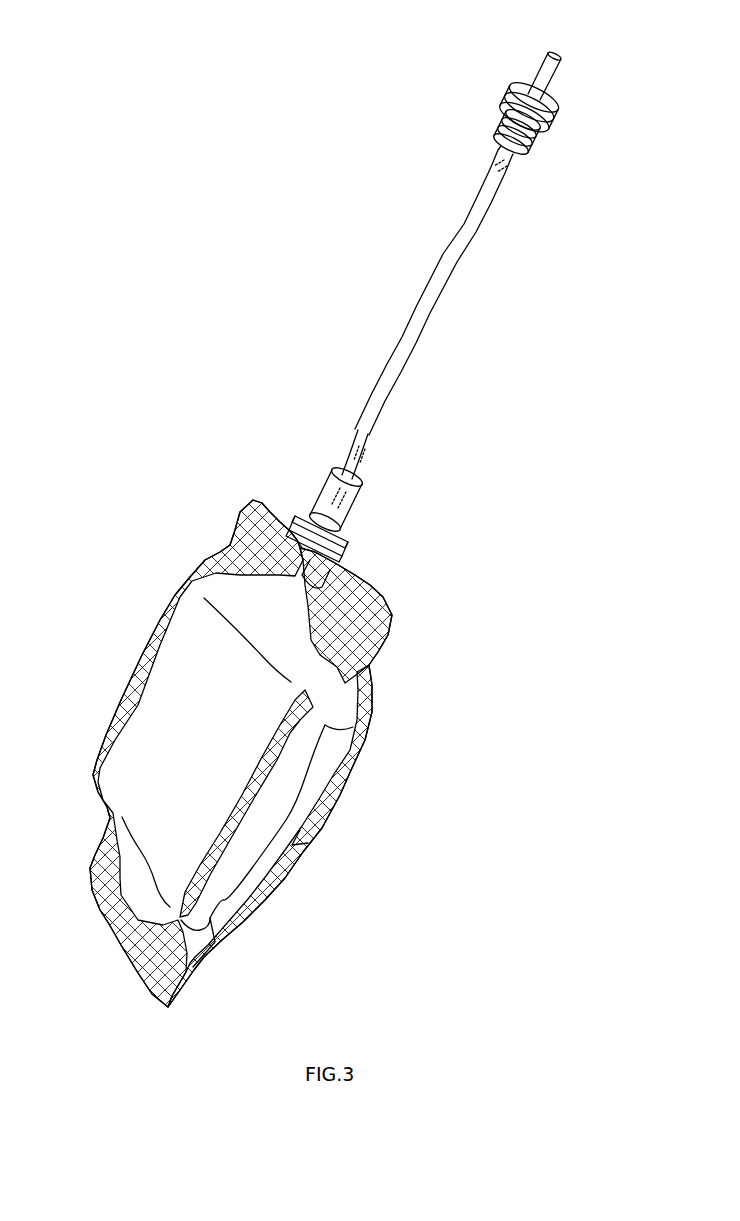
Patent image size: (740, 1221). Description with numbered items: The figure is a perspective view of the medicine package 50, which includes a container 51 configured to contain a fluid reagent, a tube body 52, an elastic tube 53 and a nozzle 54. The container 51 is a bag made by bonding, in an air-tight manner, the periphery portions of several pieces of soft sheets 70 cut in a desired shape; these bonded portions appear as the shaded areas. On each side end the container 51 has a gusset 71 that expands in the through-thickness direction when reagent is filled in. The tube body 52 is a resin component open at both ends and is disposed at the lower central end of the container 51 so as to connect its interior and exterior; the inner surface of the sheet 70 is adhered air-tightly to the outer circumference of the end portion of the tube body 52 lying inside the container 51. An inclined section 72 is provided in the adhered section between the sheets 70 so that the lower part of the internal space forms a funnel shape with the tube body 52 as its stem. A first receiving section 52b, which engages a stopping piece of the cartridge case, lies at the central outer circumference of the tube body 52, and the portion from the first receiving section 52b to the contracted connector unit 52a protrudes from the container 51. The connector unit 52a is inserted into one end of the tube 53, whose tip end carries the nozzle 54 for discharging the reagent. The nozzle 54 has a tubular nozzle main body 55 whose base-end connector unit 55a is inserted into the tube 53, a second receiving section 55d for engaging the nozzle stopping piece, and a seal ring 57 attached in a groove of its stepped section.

The medicine package 50 is at (138, 620).
The container 51 is at (147, 727).
The tube body 52 is at (327, 500).
The connector unit 52a is at (353, 430).
The first receiving section 52b is at (257, 597).
The tube 53 is at (418, 323).
The nozzle 54 is at (495, 92).
The nozzle main body 55 is at (551, 66).
The connector unit 55a is at (500, 166).
The second receiving section 55d is at (530, 150).
The seal ring 57 is at (560, 118).
The sheet 70 is at (163, 588).
The gusset 71 is at (303, 847).
The inclined section 72 is at (206, 573).